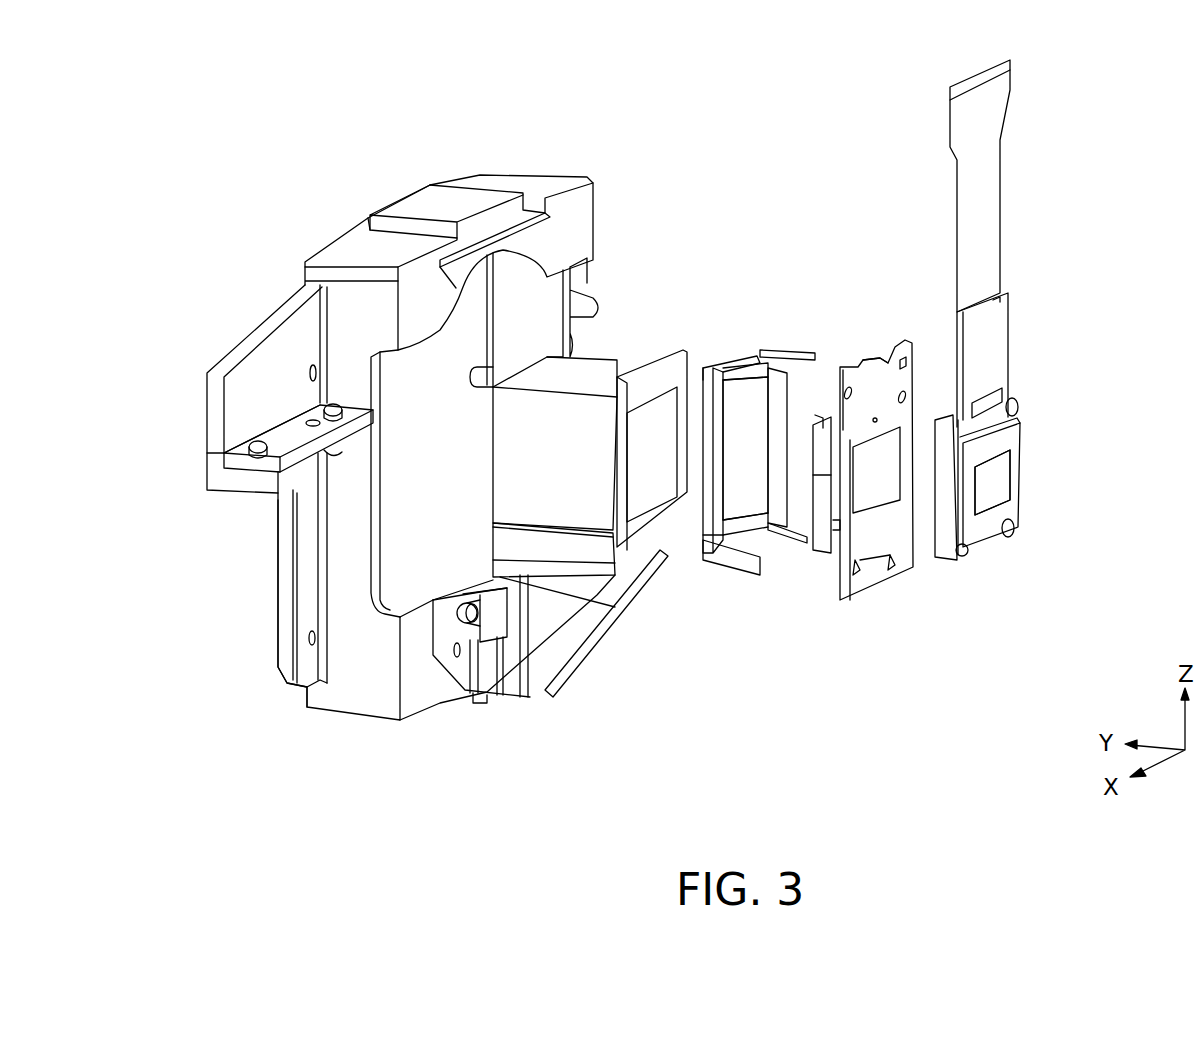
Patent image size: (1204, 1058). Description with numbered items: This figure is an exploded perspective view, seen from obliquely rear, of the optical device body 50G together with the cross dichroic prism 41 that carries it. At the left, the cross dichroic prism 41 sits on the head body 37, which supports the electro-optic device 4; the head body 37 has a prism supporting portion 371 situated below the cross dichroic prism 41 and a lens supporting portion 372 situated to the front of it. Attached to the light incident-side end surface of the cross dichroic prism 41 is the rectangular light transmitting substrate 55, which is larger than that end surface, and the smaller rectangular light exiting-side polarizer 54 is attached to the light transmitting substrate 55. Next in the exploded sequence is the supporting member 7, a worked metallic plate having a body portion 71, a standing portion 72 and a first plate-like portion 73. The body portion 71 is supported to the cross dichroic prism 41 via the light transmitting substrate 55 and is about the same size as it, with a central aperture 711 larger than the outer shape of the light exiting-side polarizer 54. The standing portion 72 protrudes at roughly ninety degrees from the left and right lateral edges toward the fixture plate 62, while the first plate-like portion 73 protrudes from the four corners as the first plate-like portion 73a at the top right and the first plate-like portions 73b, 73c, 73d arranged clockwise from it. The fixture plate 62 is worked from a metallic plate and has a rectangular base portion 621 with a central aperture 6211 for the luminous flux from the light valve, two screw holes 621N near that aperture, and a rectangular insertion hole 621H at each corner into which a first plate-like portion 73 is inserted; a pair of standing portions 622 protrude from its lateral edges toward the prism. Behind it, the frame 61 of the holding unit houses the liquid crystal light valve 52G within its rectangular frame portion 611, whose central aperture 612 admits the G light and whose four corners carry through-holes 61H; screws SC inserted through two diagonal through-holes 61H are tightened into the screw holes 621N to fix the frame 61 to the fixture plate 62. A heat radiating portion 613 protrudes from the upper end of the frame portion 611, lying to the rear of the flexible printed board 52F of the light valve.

The electro-optic device 4 is at (808, 107).
The cross dichroic prism 41 is at (513, 448).
The head body 37 is at (411, 662).
The prism supporting portion 371 is at (543, 675).
The lens supporting portion 372 is at (433, 703).
The light exiting-side polarizer 54 is at (668, 400).
The light transmitting substrate 55 is at (637, 385).
The supporting member 7 is at (750, 457).
The body portion 71 is at (740, 370).
The aperture 711 is at (738, 392).
The standing portion 72 is at (705, 542).
The first plate-like portion 73a is at (800, 350).
The first plate-like portion 73b is at (790, 545).
The first plate-like portion 73c is at (740, 578).
The first plate-like portion 73d is at (735, 355).
The first plate-like portion 73 is at (763, 457).
The fixture plate 62 is at (890, 481).
The base portion 621 is at (898, 580).
The aperture 6211 is at (916, 380).
The screw hole 621N is at (905, 345).
The insertion hole 621H is at (870, 380).
The standing portion 622 is at (815, 520).
The frame 61 is at (1042, 504).
The frame portion 611 is at (1000, 410).
The aperture 612 is at (985, 540).
The heat radiating portion 613 is at (990, 330).
The through-hole 61H is at (1014, 528).
The screw SC is at (1018, 403).
The flexible printed board 52F is at (990, 158).
The liquid crystal light valve 52G is at (1000, 468).
The optical device body 50G is at (745, 728).